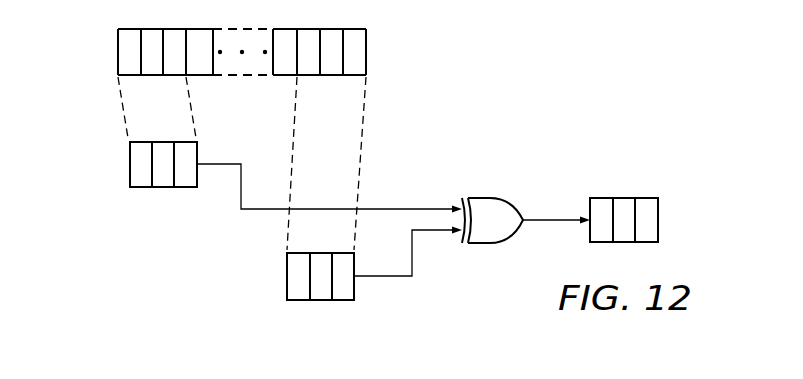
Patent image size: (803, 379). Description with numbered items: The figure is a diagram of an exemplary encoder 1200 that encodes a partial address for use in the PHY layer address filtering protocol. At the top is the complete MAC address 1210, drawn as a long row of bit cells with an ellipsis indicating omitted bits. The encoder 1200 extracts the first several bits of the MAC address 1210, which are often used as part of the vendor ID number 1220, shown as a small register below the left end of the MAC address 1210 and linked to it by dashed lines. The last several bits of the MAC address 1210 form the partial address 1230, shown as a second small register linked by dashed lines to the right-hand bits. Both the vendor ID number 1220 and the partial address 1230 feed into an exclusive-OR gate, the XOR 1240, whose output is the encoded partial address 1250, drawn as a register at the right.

The encoder 1200 is at (557, 56).
The MAC address 1210 is at (118, 51).
The vendor ID number 1220 is at (129, 157).
The partial address 1230 is at (286, 283).
The XOR 1240 is at (493, 198).
The encoded partial address 1250 is at (658, 226).